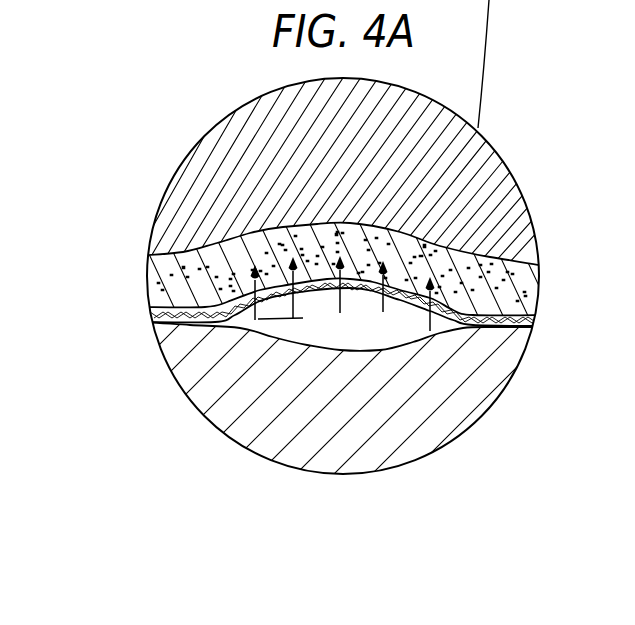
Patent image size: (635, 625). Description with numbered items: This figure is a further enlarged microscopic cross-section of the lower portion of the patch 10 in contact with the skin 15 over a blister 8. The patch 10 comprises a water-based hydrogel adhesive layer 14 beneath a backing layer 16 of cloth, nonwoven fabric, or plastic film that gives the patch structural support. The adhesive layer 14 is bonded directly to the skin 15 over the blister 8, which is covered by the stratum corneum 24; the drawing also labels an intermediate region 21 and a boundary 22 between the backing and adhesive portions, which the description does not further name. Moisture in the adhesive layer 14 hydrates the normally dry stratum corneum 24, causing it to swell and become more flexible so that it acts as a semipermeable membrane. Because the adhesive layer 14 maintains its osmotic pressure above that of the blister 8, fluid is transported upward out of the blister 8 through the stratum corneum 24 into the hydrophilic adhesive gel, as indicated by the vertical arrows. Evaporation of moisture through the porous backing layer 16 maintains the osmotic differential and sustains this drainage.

The blister 8 is at (250, 326).
The patch 10 is at (505, 143).
The hydrogel adhesive layer 14 is at (513, 279).
The skin 15 is at (487, 349).
The backing layer 16 is at (248, 132).
The particulate band layer 21 is at (190, 252).
The band boundary 22 is at (400, 277).
The stratum corneum 24 is at (222, 299).